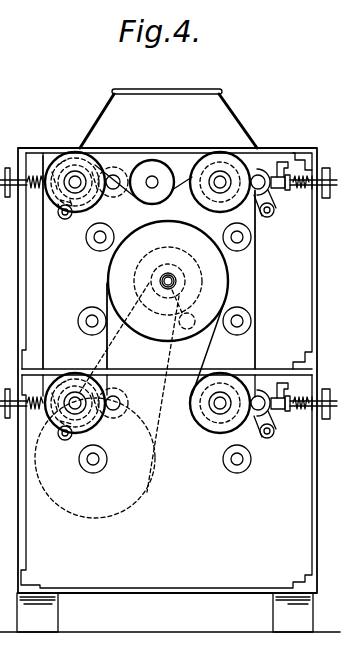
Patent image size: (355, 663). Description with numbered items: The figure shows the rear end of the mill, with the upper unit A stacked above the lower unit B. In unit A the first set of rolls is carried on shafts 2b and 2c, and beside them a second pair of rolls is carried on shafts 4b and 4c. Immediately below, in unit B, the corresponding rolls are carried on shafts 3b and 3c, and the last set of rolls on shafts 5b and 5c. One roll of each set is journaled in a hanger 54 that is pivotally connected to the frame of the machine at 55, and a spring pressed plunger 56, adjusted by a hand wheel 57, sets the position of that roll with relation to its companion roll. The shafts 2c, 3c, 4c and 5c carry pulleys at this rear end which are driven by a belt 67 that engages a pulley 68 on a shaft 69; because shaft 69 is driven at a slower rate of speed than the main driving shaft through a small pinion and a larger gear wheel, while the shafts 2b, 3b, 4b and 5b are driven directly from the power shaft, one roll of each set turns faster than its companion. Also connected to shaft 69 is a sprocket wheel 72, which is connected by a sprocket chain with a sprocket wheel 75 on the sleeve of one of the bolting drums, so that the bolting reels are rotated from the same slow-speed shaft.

The shaft 2c is at (75, 180).
The shaft 2b is at (116, 176).
The shaft 4c is at (220, 178).
The shaft 4b is at (255, 180).
The hanger 54 is at (257, 172).
The pivot connection 55 is at (267, 217).
The spring pressed plunger 56 is at (313, 169).
The hand wheel 57 is at (327, 198).
The belt 67 is at (44, 287).
The pulley 68 is at (168, 281).
The shaft 69 is at (168, 277).
The sprocket wheel 72 is at (176, 282).
The shaft 3c is at (75, 400).
The shaft 3b is at (118, 404).
The shaft 5c is at (222, 401).
The shaft 5b is at (250, 410).
The sprocket wheel 75 is at (100, 518).
The unit A is at (325, 279).
The unit B is at (326, 494).